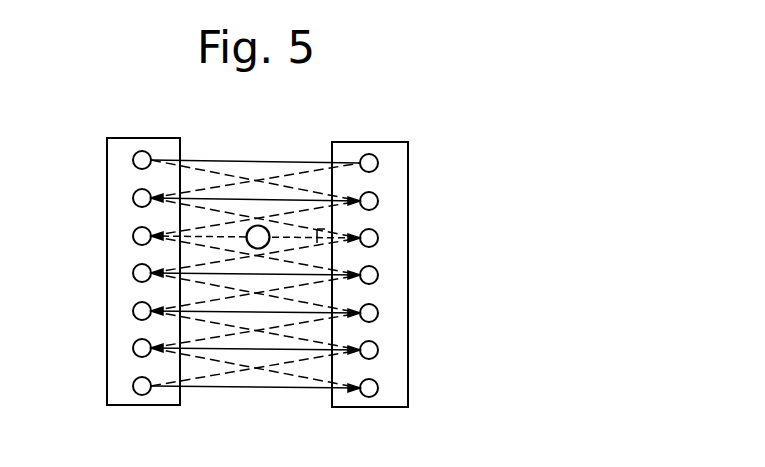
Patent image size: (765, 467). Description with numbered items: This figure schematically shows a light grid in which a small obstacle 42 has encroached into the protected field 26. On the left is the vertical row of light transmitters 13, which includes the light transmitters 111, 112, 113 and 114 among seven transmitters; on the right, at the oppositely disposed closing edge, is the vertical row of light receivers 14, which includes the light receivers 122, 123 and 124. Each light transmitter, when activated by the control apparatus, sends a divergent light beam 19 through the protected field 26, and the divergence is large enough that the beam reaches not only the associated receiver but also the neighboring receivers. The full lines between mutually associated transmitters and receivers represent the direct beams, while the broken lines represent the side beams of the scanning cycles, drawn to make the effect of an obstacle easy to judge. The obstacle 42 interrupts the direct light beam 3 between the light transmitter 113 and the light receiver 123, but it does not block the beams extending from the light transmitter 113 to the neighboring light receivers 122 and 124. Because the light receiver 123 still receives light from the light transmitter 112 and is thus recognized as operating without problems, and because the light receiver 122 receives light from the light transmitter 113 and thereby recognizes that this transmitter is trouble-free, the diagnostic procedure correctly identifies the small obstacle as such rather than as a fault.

The direct light beam 3 is at (200, 233).
The row of light transmitters 13 is at (117, 300).
The vertical row of light receivers 14 is at (396, 302).
The divergent light beam 19 is at (235, 250).
The protected field 26 is at (285, 167).
The obstacle 42 is at (258, 225).
The light transmitter 111 is at (142, 160).
The light transmitter 112 is at (133, 198).
The light transmitter 113 is at (133, 236).
The light transmitter 114 is at (103, 265).
The light receiver 122 is at (378, 201).
The light receiver 123 is at (378, 238).
The light receiver 124 is at (378, 275).